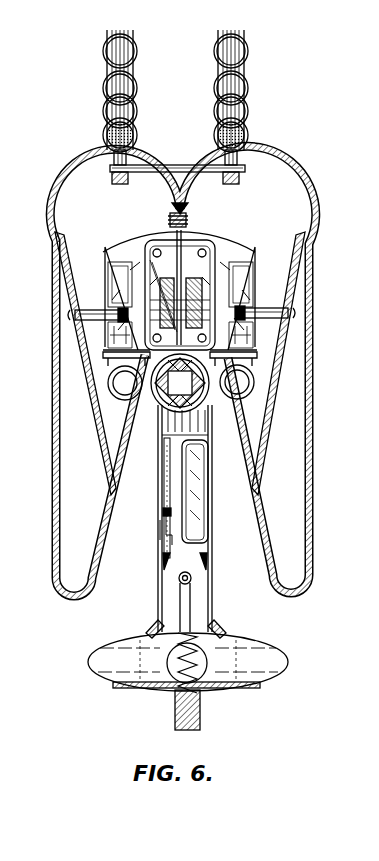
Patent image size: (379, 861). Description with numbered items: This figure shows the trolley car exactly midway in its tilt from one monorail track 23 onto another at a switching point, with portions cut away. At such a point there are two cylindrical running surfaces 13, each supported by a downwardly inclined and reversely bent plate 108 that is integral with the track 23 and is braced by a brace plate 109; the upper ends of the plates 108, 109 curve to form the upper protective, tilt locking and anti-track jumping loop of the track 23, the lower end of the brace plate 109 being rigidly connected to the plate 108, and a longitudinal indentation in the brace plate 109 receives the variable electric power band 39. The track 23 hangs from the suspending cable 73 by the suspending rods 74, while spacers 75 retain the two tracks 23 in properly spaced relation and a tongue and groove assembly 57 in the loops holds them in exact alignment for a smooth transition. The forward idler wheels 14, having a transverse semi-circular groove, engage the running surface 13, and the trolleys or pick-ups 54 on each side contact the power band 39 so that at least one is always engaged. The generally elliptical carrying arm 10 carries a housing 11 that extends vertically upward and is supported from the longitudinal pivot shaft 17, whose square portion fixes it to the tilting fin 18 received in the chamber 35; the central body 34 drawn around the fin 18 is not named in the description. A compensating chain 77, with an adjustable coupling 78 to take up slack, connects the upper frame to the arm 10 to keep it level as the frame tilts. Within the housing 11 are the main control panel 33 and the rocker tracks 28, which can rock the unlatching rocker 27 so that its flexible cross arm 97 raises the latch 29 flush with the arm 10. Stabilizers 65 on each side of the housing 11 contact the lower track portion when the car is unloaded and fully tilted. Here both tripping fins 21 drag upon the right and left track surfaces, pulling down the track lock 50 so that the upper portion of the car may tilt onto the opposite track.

The carrying arm 10 is at (277, 661).
The housing 11 is at (161, 583).
The cylindrical running surface 13 is at (108, 389).
The forward idler wheels 14 is at (104, 248).
The longitudinal pivot shaft 17 is at (180, 383).
The tilting fin 18 is at (183, 240).
The tripping fins 21 is at (112, 357).
The monorail track 23 is at (70, 191).
The unlatching rocker 27 is at (191, 593).
The rocker tracks 28 is at (163, 560).
The latch 29 is at (201, 720).
The main control panel 33 is at (200, 462).
The housing 34 is at (180, 295).
The chamber 35 is at (222, 251).
The variable electric power band 39 is at (75, 314).
The track lock 50 is at (170, 221).
The trolleys 54 is at (96, 308).
The tongue and groove assembly 57 is at (170, 206).
The stabilizers 65 is at (153, 628).
The suspending cable 73 is at (104, 134).
The suspending rods 74 is at (113, 158).
The spacers 75 is at (200, 166).
The compensating chain 77 is at (163, 462).
The adjustable coupling 78 is at (163, 512).
The flexible cross arm 97 is at (249, 688).
The plate 108 is at (257, 493).
The brace plate 109 is at (300, 273).